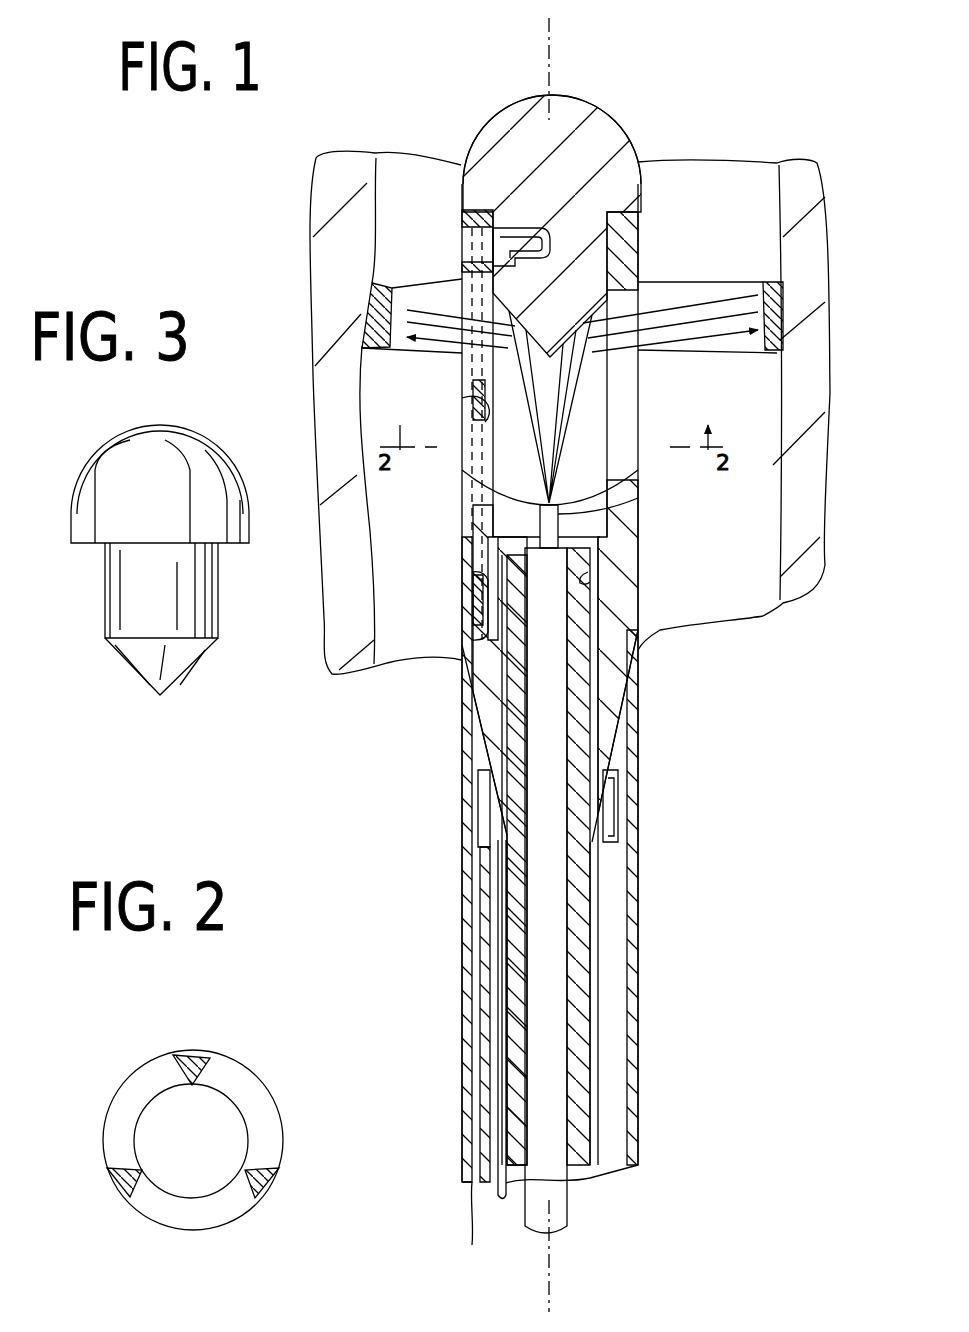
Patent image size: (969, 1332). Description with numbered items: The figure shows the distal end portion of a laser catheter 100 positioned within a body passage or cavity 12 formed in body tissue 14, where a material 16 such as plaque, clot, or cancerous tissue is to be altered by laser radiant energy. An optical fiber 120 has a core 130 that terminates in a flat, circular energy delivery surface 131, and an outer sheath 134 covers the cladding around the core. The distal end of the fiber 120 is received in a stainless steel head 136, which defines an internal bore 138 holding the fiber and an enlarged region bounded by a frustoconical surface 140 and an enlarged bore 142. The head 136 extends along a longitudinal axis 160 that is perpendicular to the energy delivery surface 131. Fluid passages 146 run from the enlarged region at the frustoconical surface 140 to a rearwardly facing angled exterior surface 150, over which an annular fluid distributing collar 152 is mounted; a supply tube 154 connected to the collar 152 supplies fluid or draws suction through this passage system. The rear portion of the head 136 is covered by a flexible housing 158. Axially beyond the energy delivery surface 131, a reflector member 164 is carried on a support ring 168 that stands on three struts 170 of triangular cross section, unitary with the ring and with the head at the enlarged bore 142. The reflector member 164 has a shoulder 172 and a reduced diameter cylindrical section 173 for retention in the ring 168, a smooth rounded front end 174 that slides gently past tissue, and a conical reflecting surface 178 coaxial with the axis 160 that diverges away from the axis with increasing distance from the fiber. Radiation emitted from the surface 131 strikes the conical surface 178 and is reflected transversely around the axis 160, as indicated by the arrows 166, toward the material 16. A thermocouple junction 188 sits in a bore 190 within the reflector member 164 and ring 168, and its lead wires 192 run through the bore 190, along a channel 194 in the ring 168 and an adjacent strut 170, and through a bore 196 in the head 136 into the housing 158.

In FIG. 1, the body passage or cavity 12 is at (718, 182).
In FIG. 1, the body tissue 14 is at (796, 175).
In FIG. 1, the material 16 is at (760, 282).
In FIG. 1, the catheter 100 is at (350, 735).
In FIG. 2, the catheter 100 is at (245, 1022).
In FIG. 1, the optical fiber 120 is at (578, 550).
In FIG. 1, the fiber core 130 is at (638, 512).
In FIG. 1, the energy delivery surface 131 is at (546, 490).
In FIG. 1, the outer sheath 134 is at (632, 568).
In FIG. 1, the head 136 is at (462, 568).
In FIG. 1, the internal bore 138 is at (638, 612).
In FIG. 1, the frustoconical surface 140 is at (638, 588).
In FIG. 1, the enlarged bore 142 is at (638, 480).
In FIG. 1, the passages 146 is at (462, 690).
In FIG. 1, the rearwardly facing angled exterior surface 150 is at (620, 745).
In FIG. 1, the fluid distributing collar 152 is at (480, 785).
In FIG. 1, the supply tube 154 is at (485, 950).
In FIG. 1, the housing 158 is at (462, 1080).
In FIG. 1, the longitudinal axis 160 is at (550, 72).
In FIG. 1, the reflector member 164 is at (543, 296).
In FIG. 3, the reflector member 164 is at (140, 459).
In FIG. 1, the arrows 166 is at (452, 318).
In FIG. 1, the support ring 168 is at (640, 240).
In FIG. 2, the support ring 168 is at (118, 1093).
In FIG. 1, the struts 170 is at (638, 450).
In FIG. 2, the struts 170 is at (208, 1068).
In FIG. 1, the shoulder 172 is at (640, 215).
In FIG. 3, the shoulder 172 is at (85, 545).
In FIG. 1, the reduced diameter cylindrical section 173 is at (617, 255).
In FIG. 3, the reduced diameter cylindrical section 173 is at (105, 595).
In FIG. 1, the rounded front end 174 is at (512, 100).
In FIG. 3, the rounded front end 174 is at (203, 440).
In FIG. 1, the conical reflecting surface 178 is at (613, 306).
In FIG. 3, the conical reflecting surface 178 is at (185, 665).
In FIG. 2, the conical reflecting surface 178 is at (157, 1102).
In FIG. 1, the thermocouple junction 188 is at (530, 237).
In FIG. 1, the bore 190 is at (462, 244).
In FIG. 1, the lead wires 192 is at (462, 264).
In FIG. 2, the lead wires 192 is at (115, 1180).
In FIG. 1, the channel 194 is at (472, 412).
In FIG. 2, the channel 194 is at (122, 1190).
In FIG. 1, the bore 196 is at (470, 588).